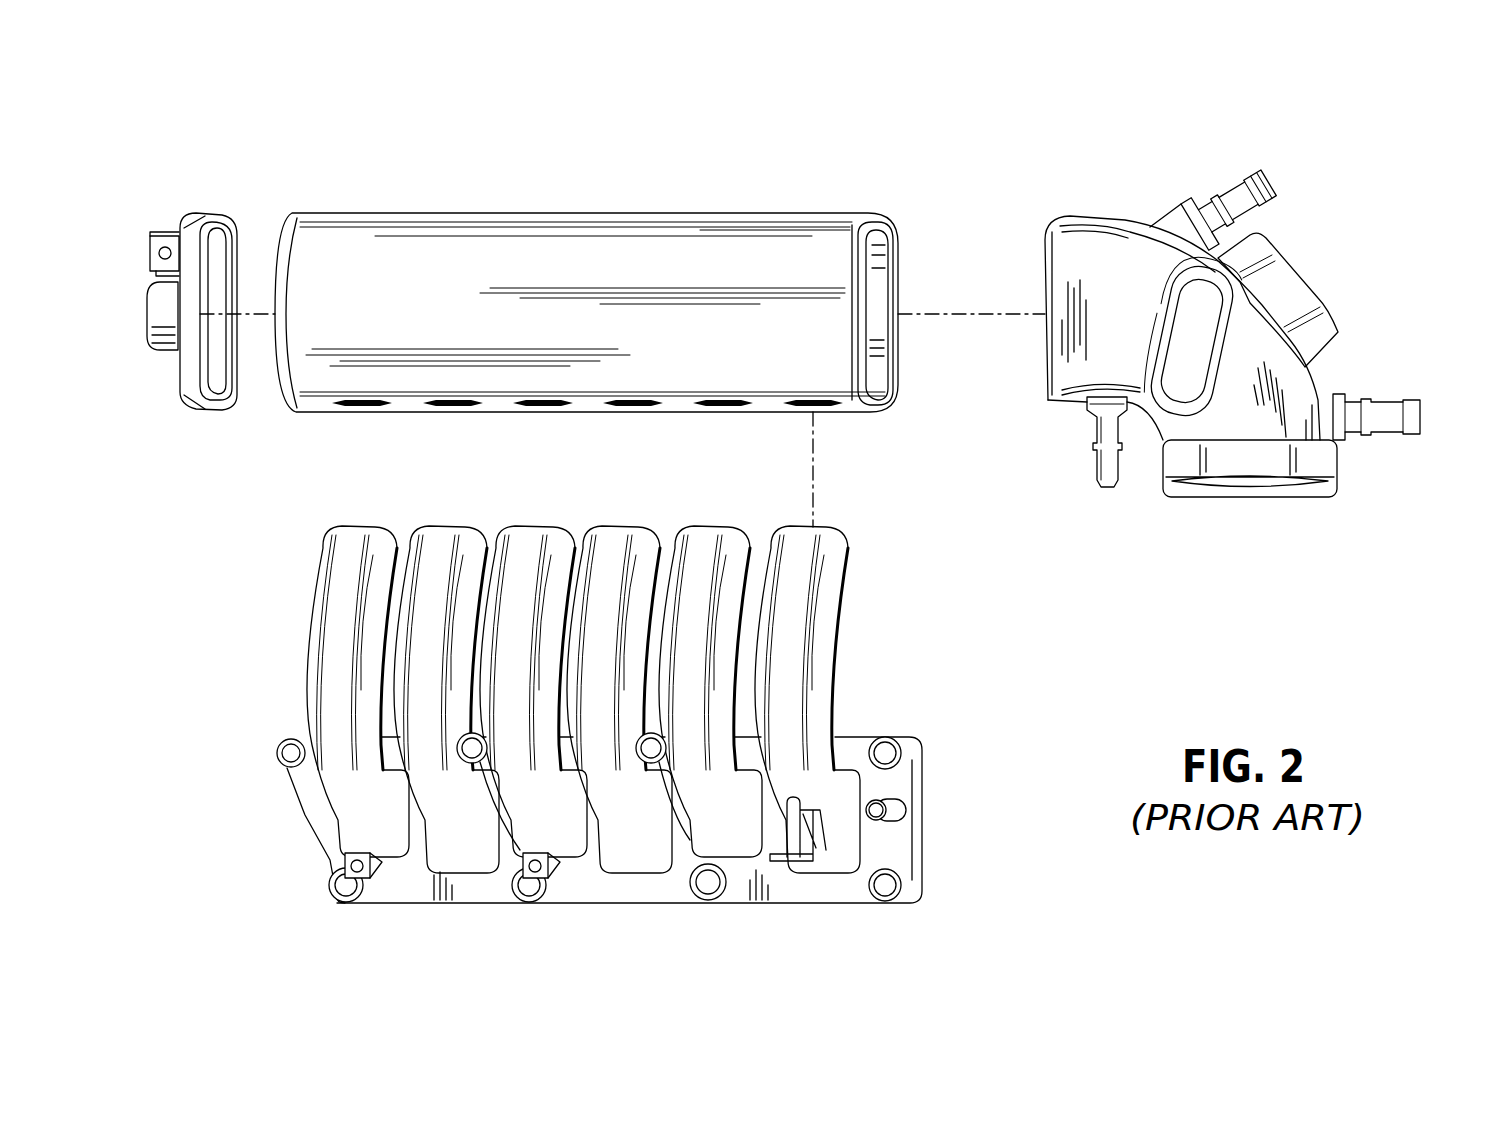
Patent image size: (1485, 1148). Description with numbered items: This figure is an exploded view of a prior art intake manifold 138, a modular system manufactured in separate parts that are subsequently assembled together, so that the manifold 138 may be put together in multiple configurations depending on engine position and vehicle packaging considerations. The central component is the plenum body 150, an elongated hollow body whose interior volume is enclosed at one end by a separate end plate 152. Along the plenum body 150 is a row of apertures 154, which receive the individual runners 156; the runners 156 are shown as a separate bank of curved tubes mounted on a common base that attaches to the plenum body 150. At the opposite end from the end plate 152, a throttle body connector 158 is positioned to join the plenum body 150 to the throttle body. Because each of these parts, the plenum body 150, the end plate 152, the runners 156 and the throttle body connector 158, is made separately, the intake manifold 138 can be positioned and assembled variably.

The intake manifold 138 is at (372, 84).
The plenum body 150 is at (282, 397).
The end plate 152 is at (216, 220).
The apertures 154 is at (543, 412).
The runners 156 is at (452, 867).
The throttle body connector 158 is at (1097, 402).